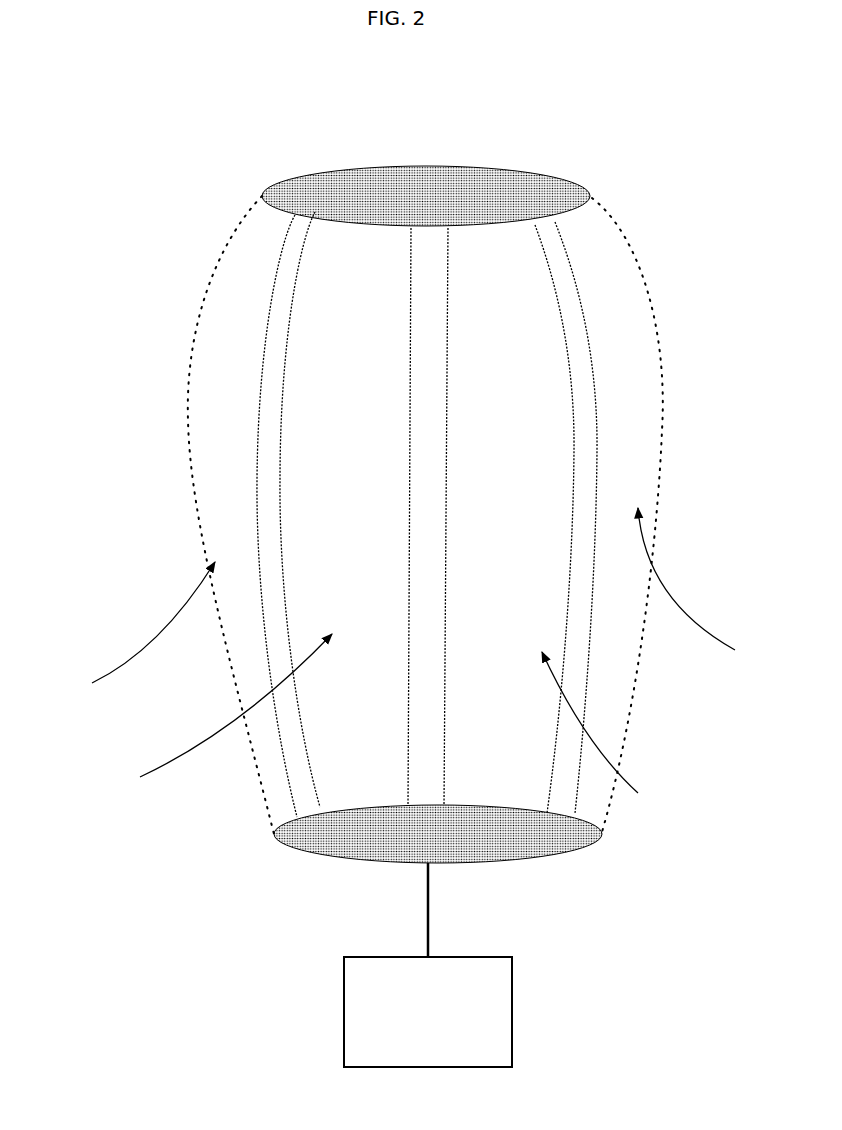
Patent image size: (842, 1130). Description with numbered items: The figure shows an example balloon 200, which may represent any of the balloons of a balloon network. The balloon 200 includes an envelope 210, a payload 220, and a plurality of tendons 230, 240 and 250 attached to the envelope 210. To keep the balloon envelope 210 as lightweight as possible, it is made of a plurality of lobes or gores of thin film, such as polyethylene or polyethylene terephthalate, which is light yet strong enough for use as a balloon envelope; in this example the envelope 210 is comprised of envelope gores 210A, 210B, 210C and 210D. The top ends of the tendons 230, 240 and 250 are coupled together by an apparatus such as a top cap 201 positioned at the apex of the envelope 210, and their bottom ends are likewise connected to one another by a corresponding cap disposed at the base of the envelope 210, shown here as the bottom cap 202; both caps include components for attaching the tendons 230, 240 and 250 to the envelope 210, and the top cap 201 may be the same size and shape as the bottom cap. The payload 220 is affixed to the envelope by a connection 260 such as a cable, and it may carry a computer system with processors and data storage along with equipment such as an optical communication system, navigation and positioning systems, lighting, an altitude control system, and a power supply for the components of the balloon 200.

The balloon 200 is at (753, 28).
The top cap 201 is at (570, 177).
The lower electrode plate 202 is at (380, 850).
The envelope 210 is at (663, 350).
The envelope gore 210A is at (126, 632).
The envelope gore 210B is at (208, 716).
The envelope gore 210C is at (617, 731).
The envelope gore 210D is at (715, 588).
The payload 220 is at (344, 1003).
The tendon 230 is at (295, 215).
The tendon 240 is at (412, 228).
The tendon 250 is at (540, 222).
The connection 260 is at (428, 923).